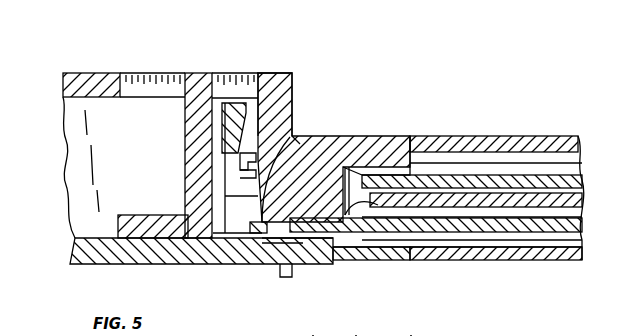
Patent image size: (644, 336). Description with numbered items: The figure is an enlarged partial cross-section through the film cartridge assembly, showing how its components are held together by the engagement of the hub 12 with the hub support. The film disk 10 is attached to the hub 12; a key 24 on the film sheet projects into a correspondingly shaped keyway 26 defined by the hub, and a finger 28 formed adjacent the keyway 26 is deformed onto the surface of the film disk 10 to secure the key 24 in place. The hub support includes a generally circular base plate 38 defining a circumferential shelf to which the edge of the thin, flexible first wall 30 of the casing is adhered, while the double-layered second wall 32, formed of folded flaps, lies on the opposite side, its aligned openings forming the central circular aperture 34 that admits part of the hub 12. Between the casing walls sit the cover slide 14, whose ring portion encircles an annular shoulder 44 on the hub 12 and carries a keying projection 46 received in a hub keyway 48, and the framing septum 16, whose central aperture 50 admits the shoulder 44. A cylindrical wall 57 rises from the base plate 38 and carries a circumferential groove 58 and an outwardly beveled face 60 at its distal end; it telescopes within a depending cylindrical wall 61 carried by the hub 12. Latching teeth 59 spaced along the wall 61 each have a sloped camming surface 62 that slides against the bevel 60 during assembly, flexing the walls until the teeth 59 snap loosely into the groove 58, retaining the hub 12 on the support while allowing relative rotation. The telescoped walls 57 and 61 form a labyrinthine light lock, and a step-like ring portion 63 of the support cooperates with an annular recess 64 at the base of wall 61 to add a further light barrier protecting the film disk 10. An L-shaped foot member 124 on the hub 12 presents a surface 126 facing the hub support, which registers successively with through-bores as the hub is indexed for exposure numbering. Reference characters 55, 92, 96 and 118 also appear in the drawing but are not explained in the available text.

The film disk 10 is at (563, 233).
The hub 12 is at (362, 136).
The cover slide 14 is at (496, 176).
The framing septum 16 is at (546, 194).
The key 24 is at (350, 220).
The keyway 26 is at (262, 241).
The finger 28 is at (284, 271).
The first wall 30 is at (518, 258).
The second wall 32 is at (462, 140).
The central circular aperture 34 is at (408, 150).
The base plate 38 is at (148, 255).
The annular shoulder 44 is at (413, 233).
The keying projection 46 is at (343, 140).
The hub keyway 48 is at (360, 205).
The central aperture 50 is at (393, 238).
The threaded portion 55 is at (224, 76).
The cylindrical wall 57 is at (194, 222).
The groove 58 is at (237, 174).
The latching teeth 59 is at (236, 160).
The beveled face 60 is at (237, 100).
The depending cylindrical wall 61 is at (292, 80).
The camming surface 62 is at (232, 197).
The step-like ring portion 63 is at (250, 233).
The annular recess 64 is at (303, 143).
The element 92 is at (410, 331).
The element 96 is at (368, 328).
The element 118 is at (326, 328).
The L-shaped foot member 124 is at (118, 216).
The surface 126 is at (124, 238).